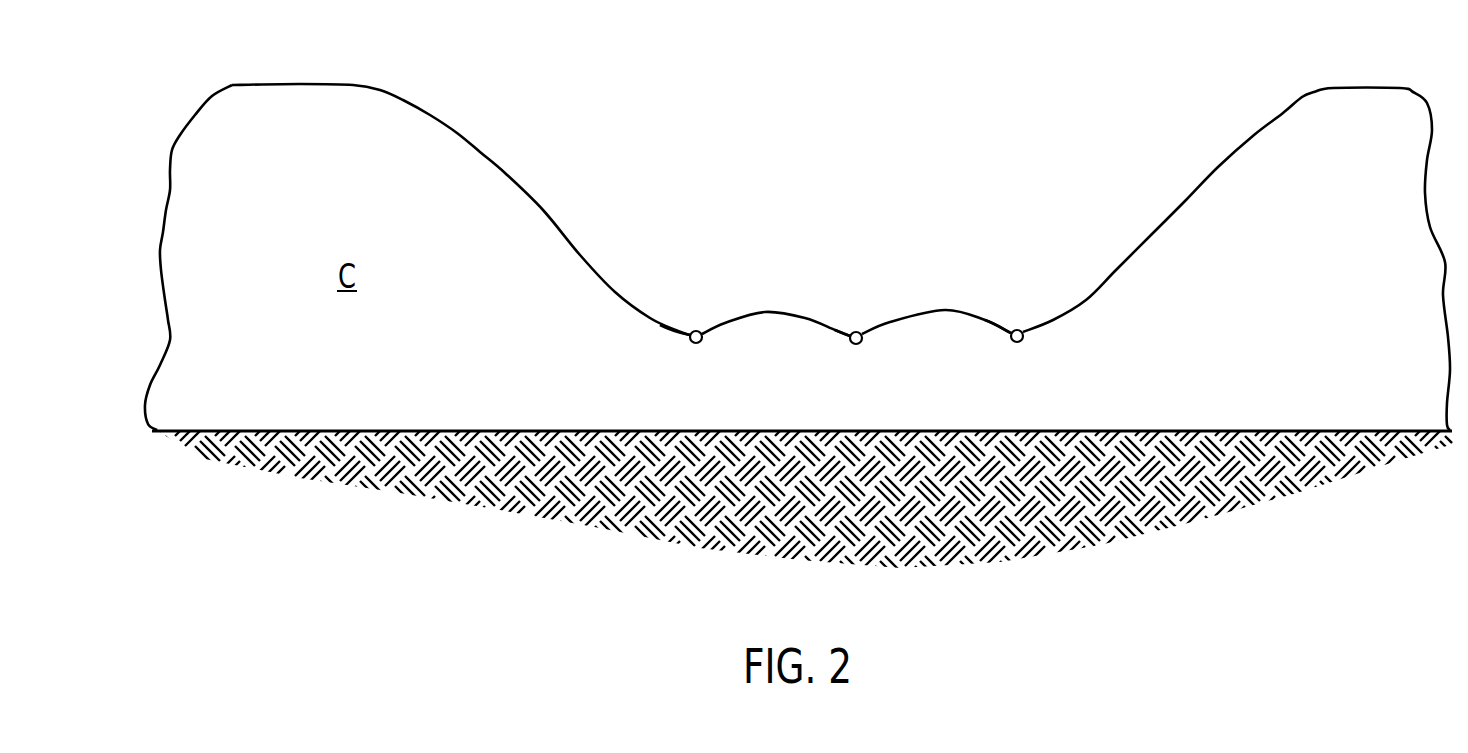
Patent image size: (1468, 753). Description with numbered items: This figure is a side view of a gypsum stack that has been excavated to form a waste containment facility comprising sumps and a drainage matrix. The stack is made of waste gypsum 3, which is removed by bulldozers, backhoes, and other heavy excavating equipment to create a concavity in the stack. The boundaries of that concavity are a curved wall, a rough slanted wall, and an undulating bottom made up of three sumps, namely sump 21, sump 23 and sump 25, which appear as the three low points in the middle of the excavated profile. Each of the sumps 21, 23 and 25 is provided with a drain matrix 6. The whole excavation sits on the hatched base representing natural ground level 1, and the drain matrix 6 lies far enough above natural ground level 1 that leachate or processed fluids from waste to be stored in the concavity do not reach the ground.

The natural ground level 1 is at (432, 434).
The waste gypsum 3 is at (1318, 98).
The drain matrix 6 is at (697, 344).
The sump 21 is at (694, 312).
The sump 23 is at (853, 312).
The sump 25 is at (1015, 312).